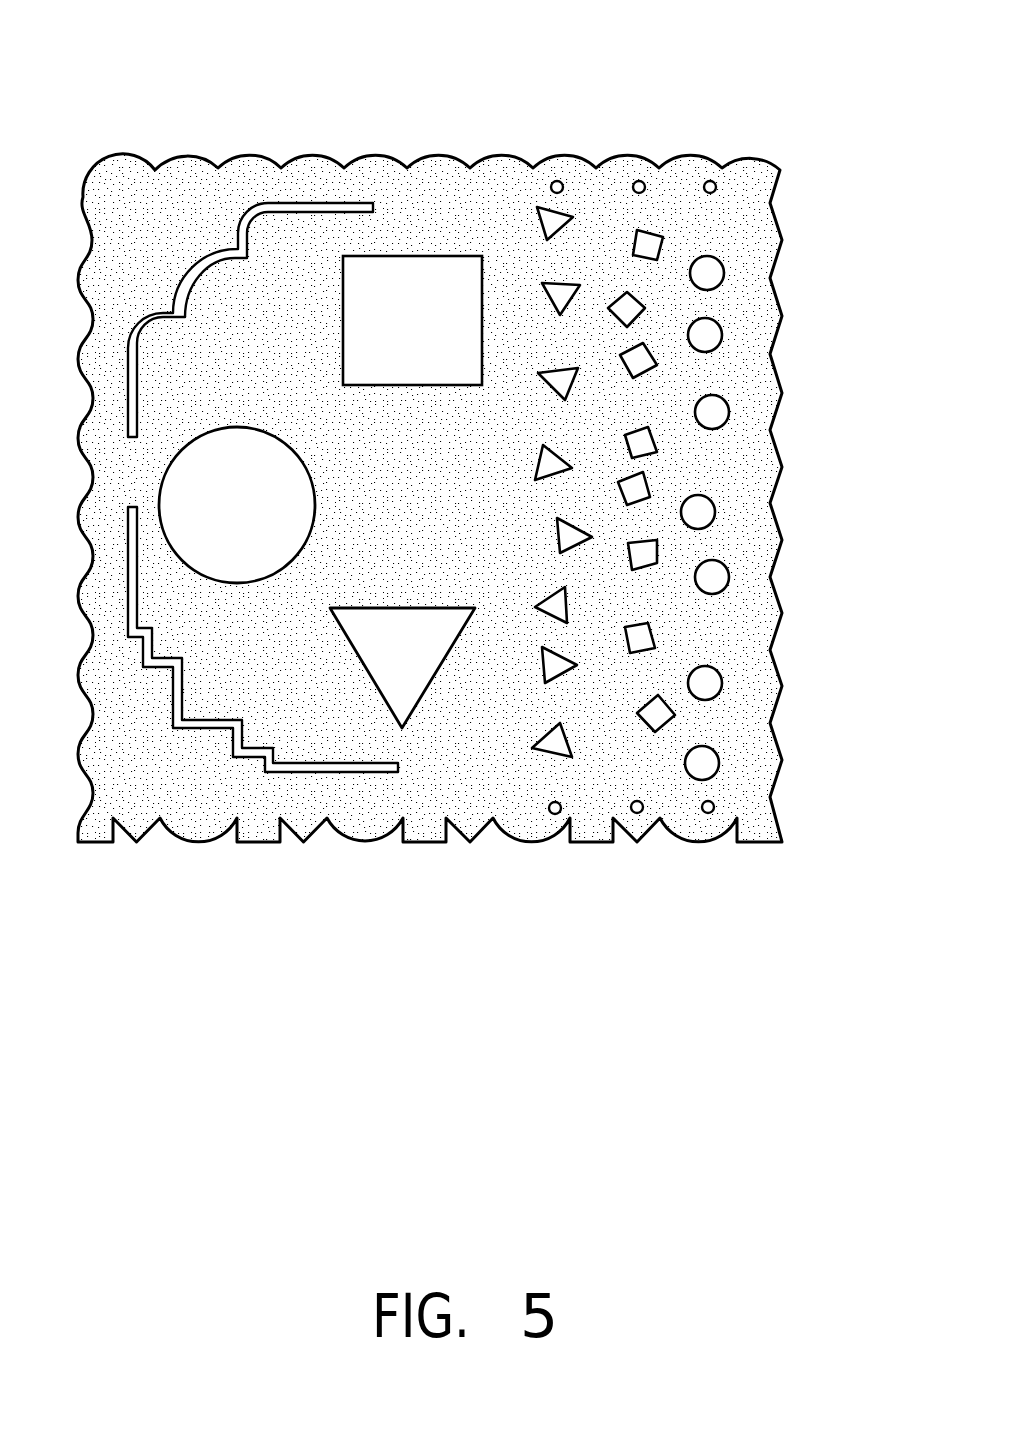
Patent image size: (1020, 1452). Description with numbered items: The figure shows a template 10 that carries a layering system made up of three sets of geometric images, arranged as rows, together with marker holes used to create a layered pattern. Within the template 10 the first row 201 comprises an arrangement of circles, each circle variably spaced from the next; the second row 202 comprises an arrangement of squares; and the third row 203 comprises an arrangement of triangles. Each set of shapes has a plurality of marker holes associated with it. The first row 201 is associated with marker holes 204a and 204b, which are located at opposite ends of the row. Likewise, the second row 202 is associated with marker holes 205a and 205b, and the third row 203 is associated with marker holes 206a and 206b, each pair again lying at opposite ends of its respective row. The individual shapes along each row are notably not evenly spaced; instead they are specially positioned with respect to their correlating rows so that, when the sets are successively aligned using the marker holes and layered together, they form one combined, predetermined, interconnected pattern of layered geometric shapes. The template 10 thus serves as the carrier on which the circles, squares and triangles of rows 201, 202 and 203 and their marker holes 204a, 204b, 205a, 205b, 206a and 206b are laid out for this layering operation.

The template 10 is at (743, 367).
The first row 201 is at (712, 272).
The second row 202 is at (652, 240).
The third row 203 is at (537, 217).
The marker hole 204a is at (713, 182).
The marker hole 204b is at (709, 813).
The marker hole 205a is at (634, 183).
The marker hole 205b is at (638, 814).
The marker hole 206a is at (557, 181).
The marker hole 206b is at (550, 816).